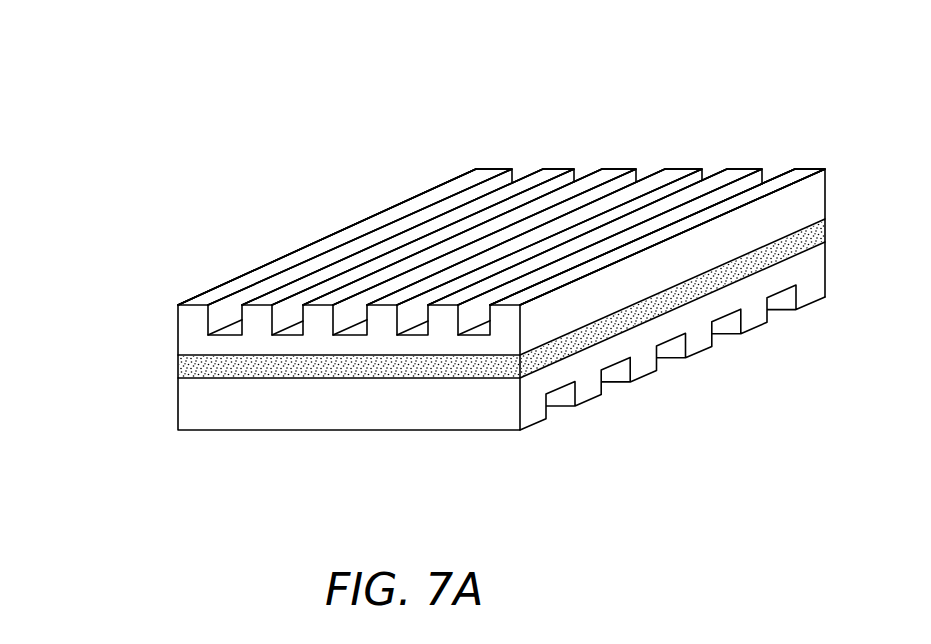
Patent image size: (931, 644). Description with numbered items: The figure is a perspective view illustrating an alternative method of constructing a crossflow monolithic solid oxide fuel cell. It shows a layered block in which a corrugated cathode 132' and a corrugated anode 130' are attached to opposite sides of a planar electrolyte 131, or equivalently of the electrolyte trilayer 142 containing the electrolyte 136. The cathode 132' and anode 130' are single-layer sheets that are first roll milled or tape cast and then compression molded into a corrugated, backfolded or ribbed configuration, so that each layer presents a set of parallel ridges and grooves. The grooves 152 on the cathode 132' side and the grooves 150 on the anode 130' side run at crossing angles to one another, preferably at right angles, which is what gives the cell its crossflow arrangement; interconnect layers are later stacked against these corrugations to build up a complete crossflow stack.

The electrolyte 136 is at (350, 205).
The electrolyte trilayer 142 is at (350, 205).
The grooves in upper substrate 152 is at (683, 170).
The corrugated cathode 132' is at (458, 262).
The electrolyte 131 is at (257, 366).
The corrugated anode 130' is at (501, 376).
The grooves in lower substrate 150 is at (535, 426).